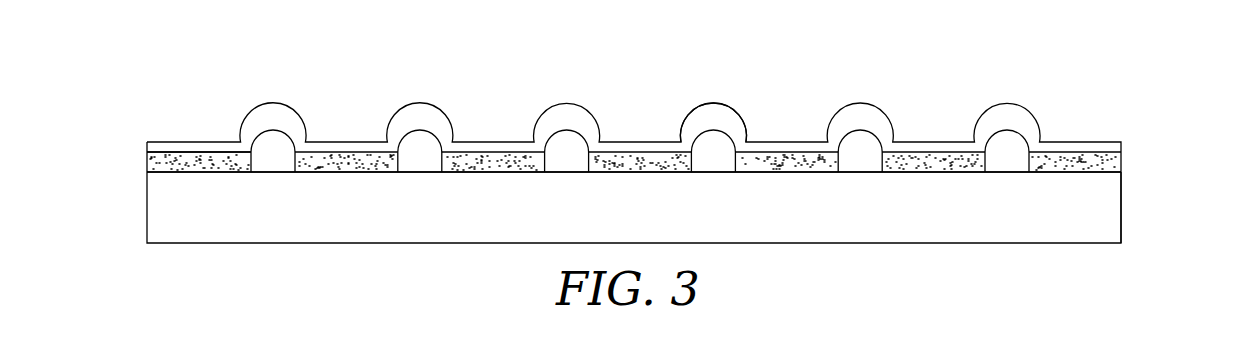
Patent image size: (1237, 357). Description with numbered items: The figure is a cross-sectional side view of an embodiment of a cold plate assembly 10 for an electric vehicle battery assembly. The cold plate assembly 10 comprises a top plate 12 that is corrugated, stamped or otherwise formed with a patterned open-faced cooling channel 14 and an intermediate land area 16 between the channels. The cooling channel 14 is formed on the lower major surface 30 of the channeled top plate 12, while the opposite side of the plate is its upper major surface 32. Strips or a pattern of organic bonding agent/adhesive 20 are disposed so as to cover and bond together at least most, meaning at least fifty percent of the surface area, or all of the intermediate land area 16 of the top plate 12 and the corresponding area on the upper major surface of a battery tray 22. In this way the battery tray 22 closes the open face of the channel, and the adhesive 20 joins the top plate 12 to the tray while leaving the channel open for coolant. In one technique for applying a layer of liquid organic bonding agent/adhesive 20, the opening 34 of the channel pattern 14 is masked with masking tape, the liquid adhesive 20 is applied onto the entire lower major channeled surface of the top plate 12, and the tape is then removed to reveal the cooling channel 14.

The cold plate assembly 10 is at (593, 169).
The top plate 12 is at (747, 121).
The cooling channel 14 is at (548, 133).
The intermediate land area 16 is at (782, 172).
The organic bonding agent/adhesive 20 is at (348, 165).
The battery tray 22 is at (968, 228).
The lower major surface 30 is at (162, 157).
The upper major surface 32 is at (202, 141).
The opening 34 is at (415, 172).